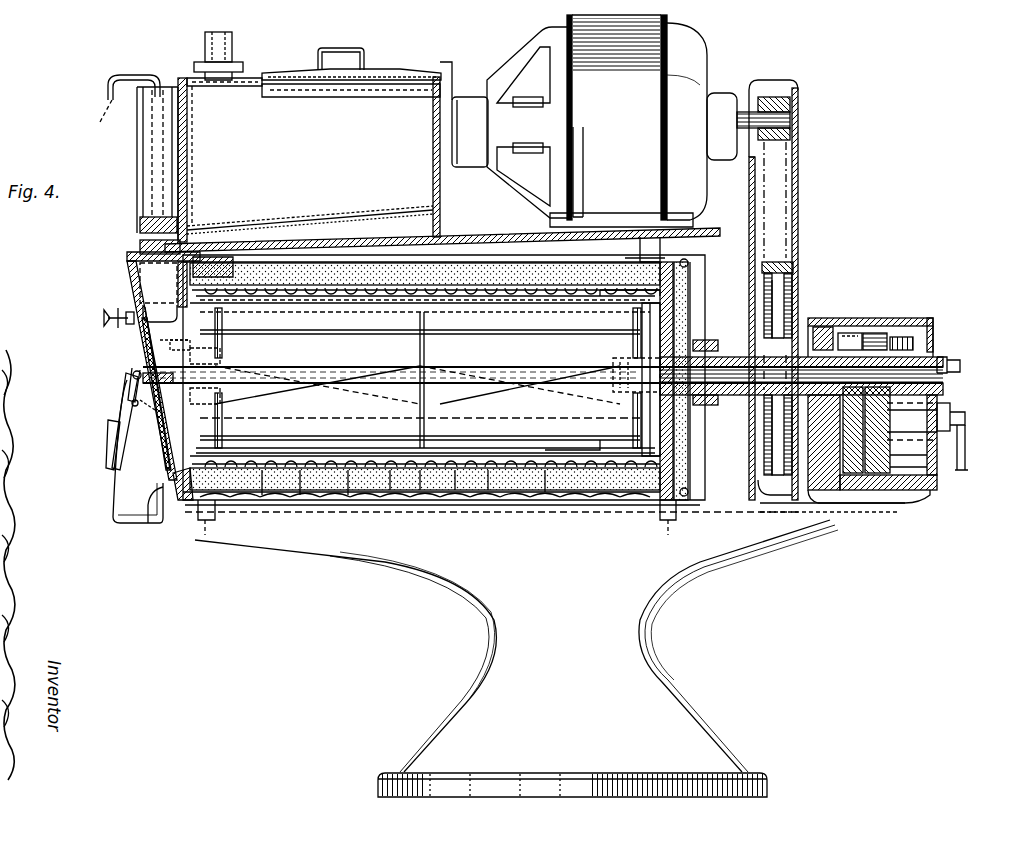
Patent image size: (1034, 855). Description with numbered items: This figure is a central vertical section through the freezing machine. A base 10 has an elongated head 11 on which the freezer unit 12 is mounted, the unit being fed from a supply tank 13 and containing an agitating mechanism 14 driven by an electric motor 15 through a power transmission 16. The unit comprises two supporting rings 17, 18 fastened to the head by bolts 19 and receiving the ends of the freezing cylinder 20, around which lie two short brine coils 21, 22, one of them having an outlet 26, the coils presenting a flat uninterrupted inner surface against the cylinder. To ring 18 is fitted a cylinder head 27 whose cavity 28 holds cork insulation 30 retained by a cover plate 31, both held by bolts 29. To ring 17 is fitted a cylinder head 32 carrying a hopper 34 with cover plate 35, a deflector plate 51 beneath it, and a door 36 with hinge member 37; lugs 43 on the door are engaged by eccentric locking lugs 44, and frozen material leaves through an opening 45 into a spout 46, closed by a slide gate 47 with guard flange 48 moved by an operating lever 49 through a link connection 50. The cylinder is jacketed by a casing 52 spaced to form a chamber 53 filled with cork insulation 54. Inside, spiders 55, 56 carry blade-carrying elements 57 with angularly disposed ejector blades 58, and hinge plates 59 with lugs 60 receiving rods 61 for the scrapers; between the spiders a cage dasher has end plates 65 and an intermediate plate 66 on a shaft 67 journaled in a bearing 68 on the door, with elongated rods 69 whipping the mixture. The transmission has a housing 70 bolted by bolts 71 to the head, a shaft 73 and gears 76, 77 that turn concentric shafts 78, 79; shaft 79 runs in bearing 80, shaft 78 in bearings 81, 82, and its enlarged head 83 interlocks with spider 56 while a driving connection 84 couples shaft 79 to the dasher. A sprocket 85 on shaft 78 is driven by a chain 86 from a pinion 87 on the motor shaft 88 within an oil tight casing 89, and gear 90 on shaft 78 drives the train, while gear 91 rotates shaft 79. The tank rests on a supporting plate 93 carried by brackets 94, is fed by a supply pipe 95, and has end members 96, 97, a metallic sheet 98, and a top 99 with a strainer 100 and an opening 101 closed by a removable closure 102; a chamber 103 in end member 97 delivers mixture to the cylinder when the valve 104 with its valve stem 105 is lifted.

The base 10 is at (650, 705).
The elongated head 11 is at (492, 529).
The freezer unit 12 is at (700, 272).
The supply tank 13 is at (309, 159).
The agitating mechanism 14 is at (424, 360).
The electric motor 15 is at (683, 56).
The power transmission 16 is at (930, 358).
The supporting ring 17 is at (182, 496).
The supporting ring 18 is at (690, 478).
The bolts 19 is at (205, 535).
The freezing cylinder 20 is at (420, 490).
The brine coil 21 is at (312, 470).
The brine coil 22 is at (548, 492).
The outlet 26 is at (372, 470).
The cylinder head 27 is at (690, 300).
The chamber or cavity 28 is at (690, 322).
The bolts 29 is at (700, 256).
The insulating material 30 is at (690, 438).
The cover plate 31 is at (690, 458).
The cylinder head 32 is at (155, 510).
The hopper 34 is at (131, 288).
The cover plate 35 is at (127, 256).
The door or closure 36 is at (148, 342).
The hinge member 37 is at (150, 360).
The lugs 43 is at (140, 332).
The eccentric locking lugs 44 is at (104, 316).
The opening 45 is at (118, 478).
The spout 46 is at (120, 522).
The slide valve or gate 47 is at (115, 510).
The guard flange 48 is at (125, 538).
The operating lever 49 is at (122, 405).
The link connection 50 is at (108, 432).
The deflector plate 51 is at (150, 345).
The casing or covering 52 is at (300, 495).
The chamber 53 is at (262, 495).
The cork insulation 54 is at (348, 495).
The spider 55 is at (222, 356).
The spider 56 is at (655, 412).
The ejector blade-carrying elements 57 is at (342, 380).
The ejector blades 58 is at (320, 404).
The hinge plates 59 is at (490, 490).
The lugs 60 is at (458, 490).
The rods 61 is at (392, 490).
The end plates 65 is at (638, 345).
The intermediate plate 66 is at (428, 416).
The shaft 67 is at (128, 382).
The bearing 68 is at (134, 376).
The elongated rods 69 is at (545, 450).
The housing 70 is at (915, 497).
The bolts 71 is at (918, 470).
The shaft 73 is at (950, 408).
The gear 76 is at (853, 473).
The gear 77 is at (876, 473).
The shaft 78 is at (848, 333).
The shaft 79 is at (945, 358).
The bearing 80 is at (958, 366).
The bearing 81 is at (822, 327).
The bearing 82 is at (712, 340).
The enlarged head 83 is at (718, 403).
The driving connection 84 is at (614, 389).
The sprocket 85 is at (794, 268).
The sprocket chain or belt 86 is at (787, 186).
The driving pinion 87 is at (790, 128).
The motor shaft 88 is at (790, 98).
The oil tight casing 89 is at (799, 218).
The gear 90 is at (875, 333).
The gear 91 is at (902, 337).
The supporting plate 93 is at (462, 236).
The brackets 94 is at (262, 262).
The supply pipe 95 is at (234, 44).
The end member 96 is at (442, 196).
The end member 97 is at (188, 138).
The metallic sheet 98 is at (290, 226).
The top 99 is at (240, 76).
The screen or strainer 100 is at (335, 99).
The opening 101 is at (438, 72).
The removable closure 102 is at (386, 68).
The chamber 103 is at (137, 138).
The valve 104 is at (140, 228).
The valve stem 105 is at (148, 70).